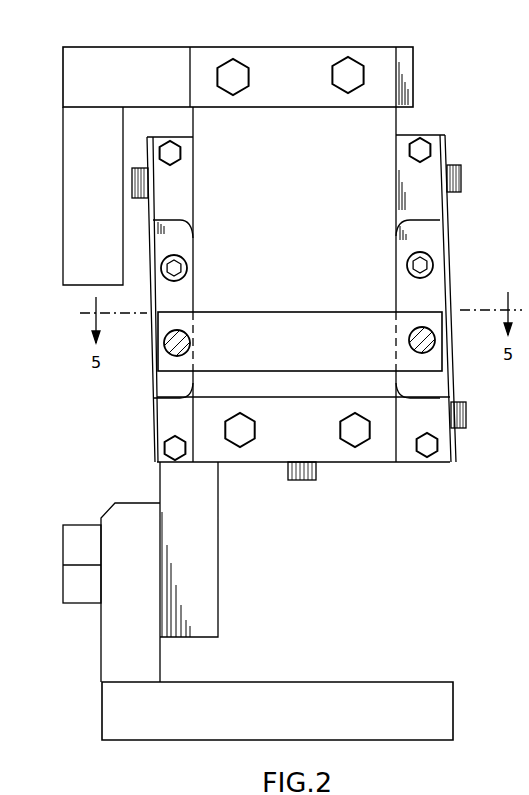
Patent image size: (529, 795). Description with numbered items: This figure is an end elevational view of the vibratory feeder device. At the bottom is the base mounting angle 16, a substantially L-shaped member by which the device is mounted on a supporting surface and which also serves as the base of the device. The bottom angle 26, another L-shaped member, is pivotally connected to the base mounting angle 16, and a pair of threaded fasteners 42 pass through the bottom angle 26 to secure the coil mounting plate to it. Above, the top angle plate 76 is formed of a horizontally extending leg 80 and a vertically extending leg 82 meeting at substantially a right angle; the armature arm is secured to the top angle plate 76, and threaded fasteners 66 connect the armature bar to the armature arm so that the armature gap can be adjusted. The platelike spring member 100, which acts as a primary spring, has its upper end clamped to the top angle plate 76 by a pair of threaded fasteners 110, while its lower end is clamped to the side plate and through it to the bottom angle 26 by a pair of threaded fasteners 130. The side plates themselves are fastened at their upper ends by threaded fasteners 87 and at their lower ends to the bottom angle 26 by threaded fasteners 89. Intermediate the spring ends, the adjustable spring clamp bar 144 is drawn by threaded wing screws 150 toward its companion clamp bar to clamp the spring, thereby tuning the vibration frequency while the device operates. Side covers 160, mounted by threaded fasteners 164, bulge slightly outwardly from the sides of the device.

The base mounting angle 16 is at (318, 681).
The bottom angle 26 is at (218, 567).
The threaded fasteners 42 is at (300, 481).
The threaded fasteners 66 is at (188, 270).
The top angle plate 76 is at (102, 47).
The horizontally extending leg 80 is at (299, 60).
The vertically extending leg 82 is at (63, 206).
The threaded fasteners 87 is at (181, 153).
The threaded fasteners 89 is at (163, 451).
The spring member 100 is at (279, 202).
The threaded fasteners 110 is at (252, 77).
The threaded fasteners 130 is at (338, 430).
The adjustable spring clamp bar 144 is at (283, 350).
The threaded wing screws 150 is at (192, 344).
The side covers 160 is at (147, 246).
The threaded fasteners 164 is at (461, 178).